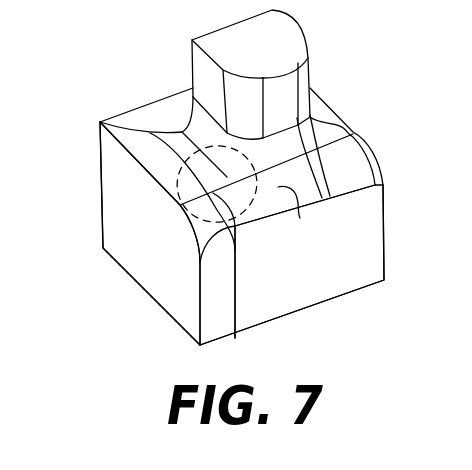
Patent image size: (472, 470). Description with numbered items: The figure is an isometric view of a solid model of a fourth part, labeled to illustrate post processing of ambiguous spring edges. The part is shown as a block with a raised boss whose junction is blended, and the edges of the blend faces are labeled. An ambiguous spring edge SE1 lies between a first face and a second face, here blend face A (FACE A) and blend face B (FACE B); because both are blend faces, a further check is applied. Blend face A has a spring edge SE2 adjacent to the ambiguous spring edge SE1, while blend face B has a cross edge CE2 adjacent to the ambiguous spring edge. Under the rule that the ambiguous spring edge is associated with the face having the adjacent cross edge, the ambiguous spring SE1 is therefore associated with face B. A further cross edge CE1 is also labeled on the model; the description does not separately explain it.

The blend face A FACE A is at (100, 122).
The blend face B FACE B is at (292, 265).
The ambiguous spring edge SE1 is at (313, 120).
The spring edge of blend face A SE2 is at (179, 205).
The curve edge 1 CE1 is at (300, 218).
The cross edge of blend face B CE2 is at (200, 265).